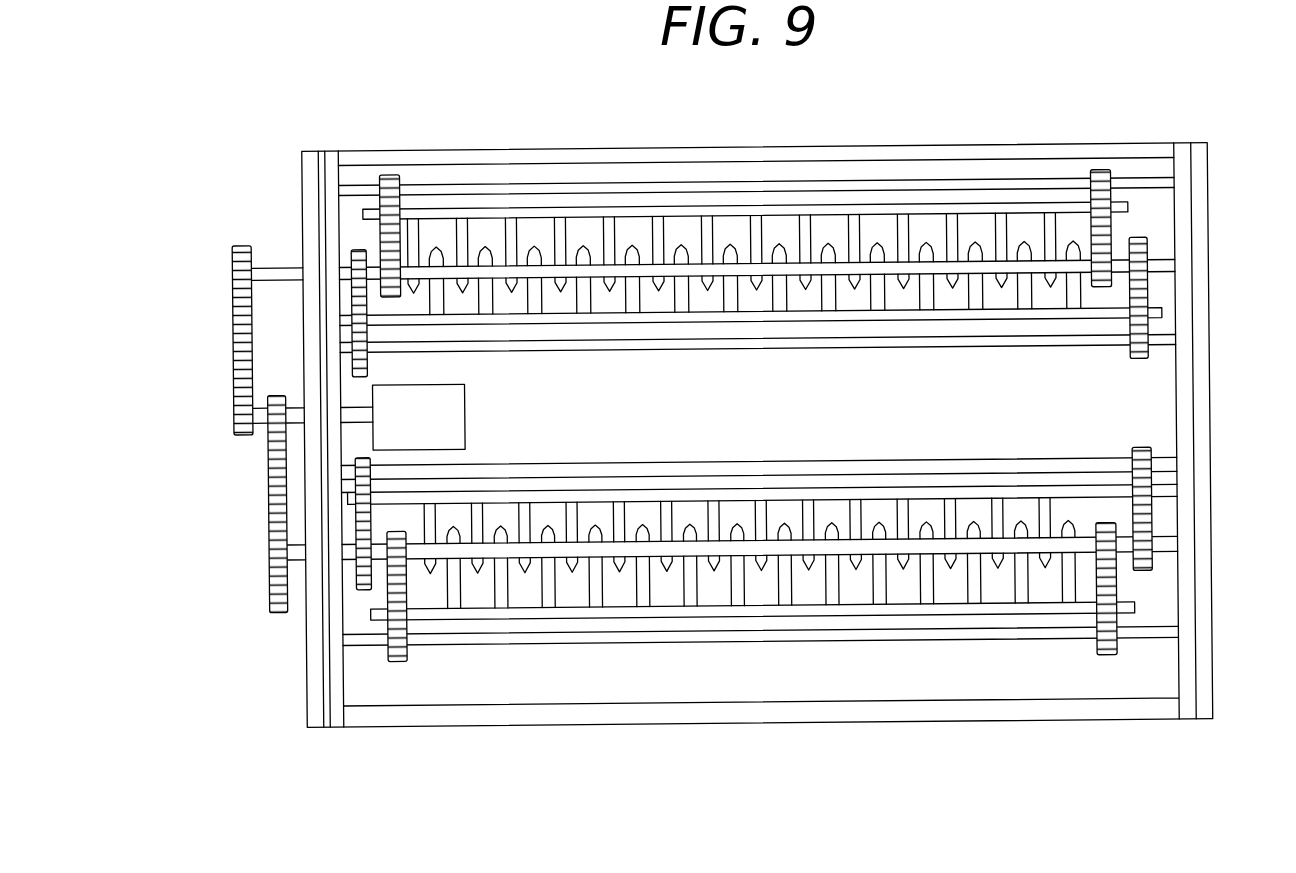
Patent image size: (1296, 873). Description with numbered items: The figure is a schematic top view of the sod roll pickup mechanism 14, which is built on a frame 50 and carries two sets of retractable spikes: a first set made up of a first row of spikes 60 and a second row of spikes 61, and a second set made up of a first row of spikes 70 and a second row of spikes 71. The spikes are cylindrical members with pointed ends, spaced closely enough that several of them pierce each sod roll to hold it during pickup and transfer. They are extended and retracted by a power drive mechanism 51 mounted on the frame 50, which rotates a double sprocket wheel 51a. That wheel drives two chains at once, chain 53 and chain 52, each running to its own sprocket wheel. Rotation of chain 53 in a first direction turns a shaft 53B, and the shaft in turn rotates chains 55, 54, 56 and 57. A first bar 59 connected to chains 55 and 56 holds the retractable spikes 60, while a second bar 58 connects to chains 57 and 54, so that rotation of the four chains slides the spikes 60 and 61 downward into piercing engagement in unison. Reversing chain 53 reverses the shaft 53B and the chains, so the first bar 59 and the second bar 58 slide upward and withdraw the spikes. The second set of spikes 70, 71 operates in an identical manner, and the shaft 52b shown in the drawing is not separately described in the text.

The sod roll pickup mechanism 14 is at (823, 115).
The frame 50 is at (970, 710).
The power drive mechanism 51 is at (447, 416).
The double sprocket wheel 51a is at (233, 417).
The chain 52 is at (267, 483).
The gear shaft 52b is at (518, 550).
The chain 53 is at (236, 317).
The shaft 53B is at (594, 272).
The chain 54 is at (356, 258).
The chain 55 is at (391, 175).
The chain 56 is at (1102, 175).
The chain 57 is at (1140, 257).
The second bar 58 is at (909, 320).
The first bar 59 is at (875, 208).
The first row of spikes 60 is at (753, 218).
The second row of spikes 61 is at (732, 304).
The first row of spikes 70 is at (762, 505).
The second row of spikes 71 is at (836, 581).